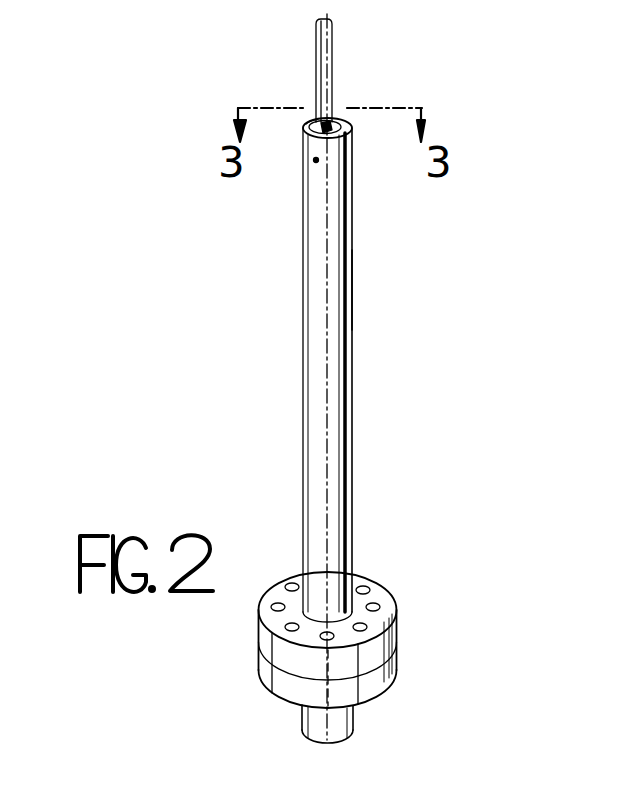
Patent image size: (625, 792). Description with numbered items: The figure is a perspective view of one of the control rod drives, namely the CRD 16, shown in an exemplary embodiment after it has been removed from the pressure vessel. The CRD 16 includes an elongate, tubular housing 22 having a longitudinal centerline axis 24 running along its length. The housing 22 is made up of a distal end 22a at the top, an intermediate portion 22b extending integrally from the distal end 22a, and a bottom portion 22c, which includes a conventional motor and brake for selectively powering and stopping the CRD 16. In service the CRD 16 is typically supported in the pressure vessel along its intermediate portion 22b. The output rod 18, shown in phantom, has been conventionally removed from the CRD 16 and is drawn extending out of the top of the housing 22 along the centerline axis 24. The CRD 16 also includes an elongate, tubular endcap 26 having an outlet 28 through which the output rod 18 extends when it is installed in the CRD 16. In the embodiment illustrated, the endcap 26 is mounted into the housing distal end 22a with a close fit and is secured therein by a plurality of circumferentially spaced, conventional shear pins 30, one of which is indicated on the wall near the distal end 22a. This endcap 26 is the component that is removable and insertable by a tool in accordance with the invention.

The control rod drive 16 is at (397, 608).
The output rod 18 is at (316, 50).
The tubular housing 22 is at (353, 397).
The distal end 22a is at (353, 152).
The intermediate portion 22b is at (353, 300).
The bottom portion 22c is at (353, 716).
The longitudinal centerline axis 24 is at (327, 320).
The endcap 26 is at (313, 123).
The outlet 28 is at (327, 123).
The shear pins 30 is at (316, 160).